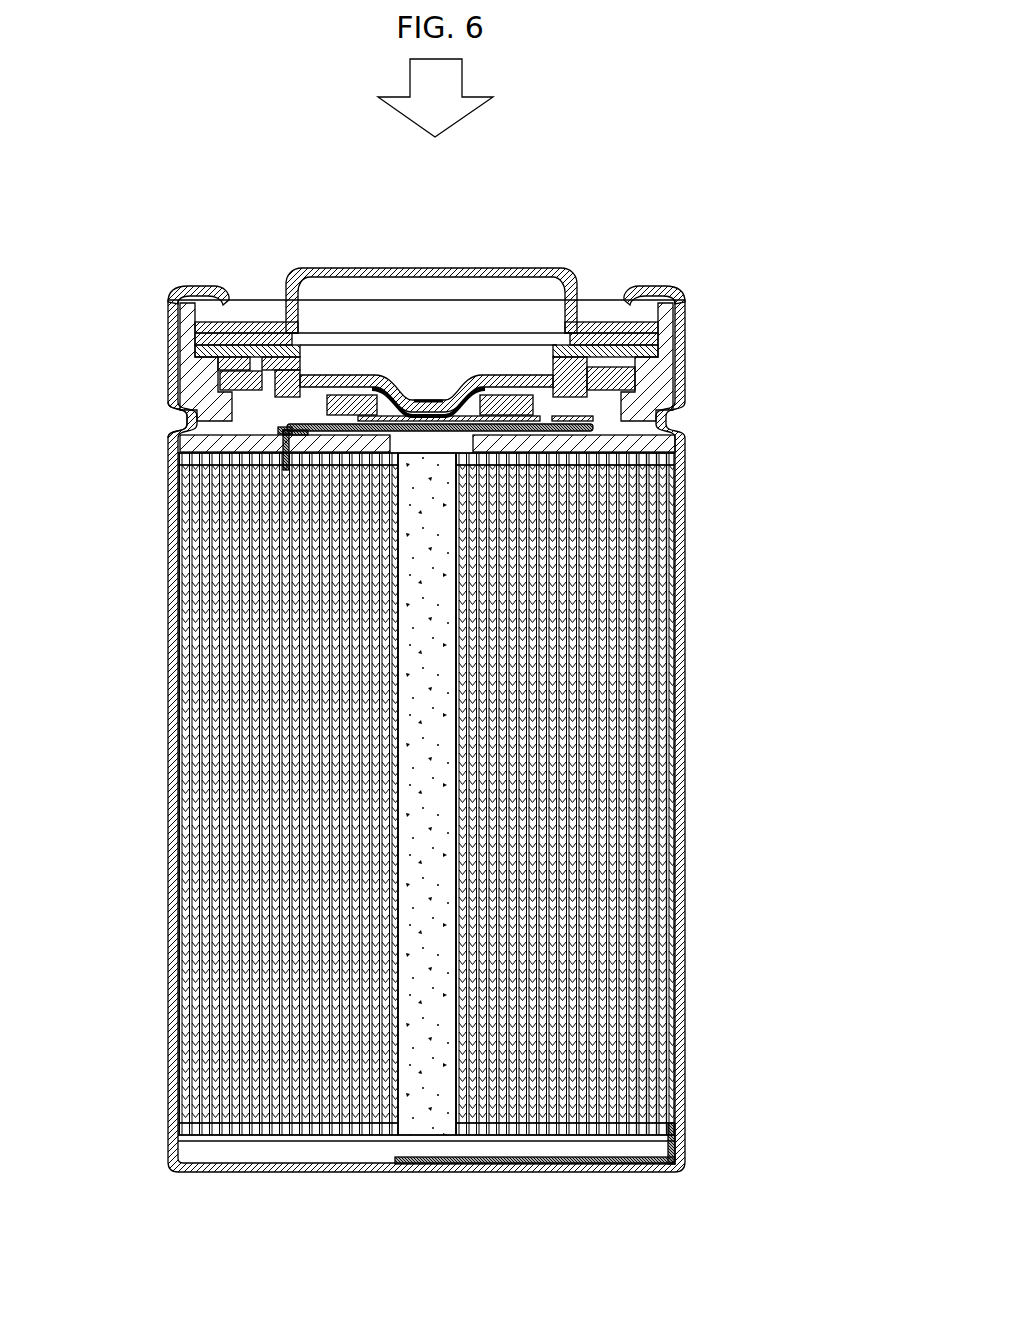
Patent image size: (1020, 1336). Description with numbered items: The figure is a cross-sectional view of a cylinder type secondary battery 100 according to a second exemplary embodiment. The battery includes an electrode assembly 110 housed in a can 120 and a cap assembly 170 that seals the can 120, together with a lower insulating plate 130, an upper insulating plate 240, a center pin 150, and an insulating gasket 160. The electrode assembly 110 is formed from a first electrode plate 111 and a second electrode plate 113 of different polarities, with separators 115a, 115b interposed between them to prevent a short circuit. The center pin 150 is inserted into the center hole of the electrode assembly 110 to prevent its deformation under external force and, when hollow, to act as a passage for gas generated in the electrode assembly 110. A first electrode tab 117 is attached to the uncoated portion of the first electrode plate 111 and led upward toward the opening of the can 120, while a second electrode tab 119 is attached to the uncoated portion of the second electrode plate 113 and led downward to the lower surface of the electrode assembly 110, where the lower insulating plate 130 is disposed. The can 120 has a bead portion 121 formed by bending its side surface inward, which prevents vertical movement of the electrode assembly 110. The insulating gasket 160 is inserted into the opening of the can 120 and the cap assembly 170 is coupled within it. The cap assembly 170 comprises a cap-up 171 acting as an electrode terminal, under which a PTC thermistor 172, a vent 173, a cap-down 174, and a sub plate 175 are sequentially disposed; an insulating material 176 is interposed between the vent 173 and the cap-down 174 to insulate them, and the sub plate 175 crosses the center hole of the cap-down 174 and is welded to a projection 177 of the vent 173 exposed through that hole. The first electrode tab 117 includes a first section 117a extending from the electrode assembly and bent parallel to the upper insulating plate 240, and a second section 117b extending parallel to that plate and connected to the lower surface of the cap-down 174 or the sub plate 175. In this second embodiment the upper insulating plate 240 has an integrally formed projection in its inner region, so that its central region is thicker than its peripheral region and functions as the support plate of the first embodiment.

The cylinder type secondary battery 100 is at (175, 169).
The electrode assembly 110 is at (771, 432).
The first electrode plate 111 is at (645, 600).
The second electrode plate 113 is at (667, 527).
The separator 115a is at (665, 560).
The separator 115b is at (635, 632).
The first electrode tab 117 is at (650, 437).
The first section 117a is at (283, 431).
The second section 117b is at (598, 426).
The second electrode tab 119 is at (600, 1173).
The can 120 is at (170, 553).
The bead portion 121 is at (172, 420).
The lower insulating plate 130 is at (305, 1148).
The center pin 150 is at (412, 616).
The insulating gasket 160 is at (672, 346).
The cap assembly 170 is at (280, 200).
The cap-up 171 is at (500, 268).
The PTC thermistor 172 is at (603, 322).
The vent 173 is at (302, 358).
The cap-down 174 is at (353, 375).
The sub plate 175 is at (434, 404).
The insulating material 176 is at (253, 322).
The projection 177 is at (426, 398).
The upper insulating plate 240 is at (333, 443).